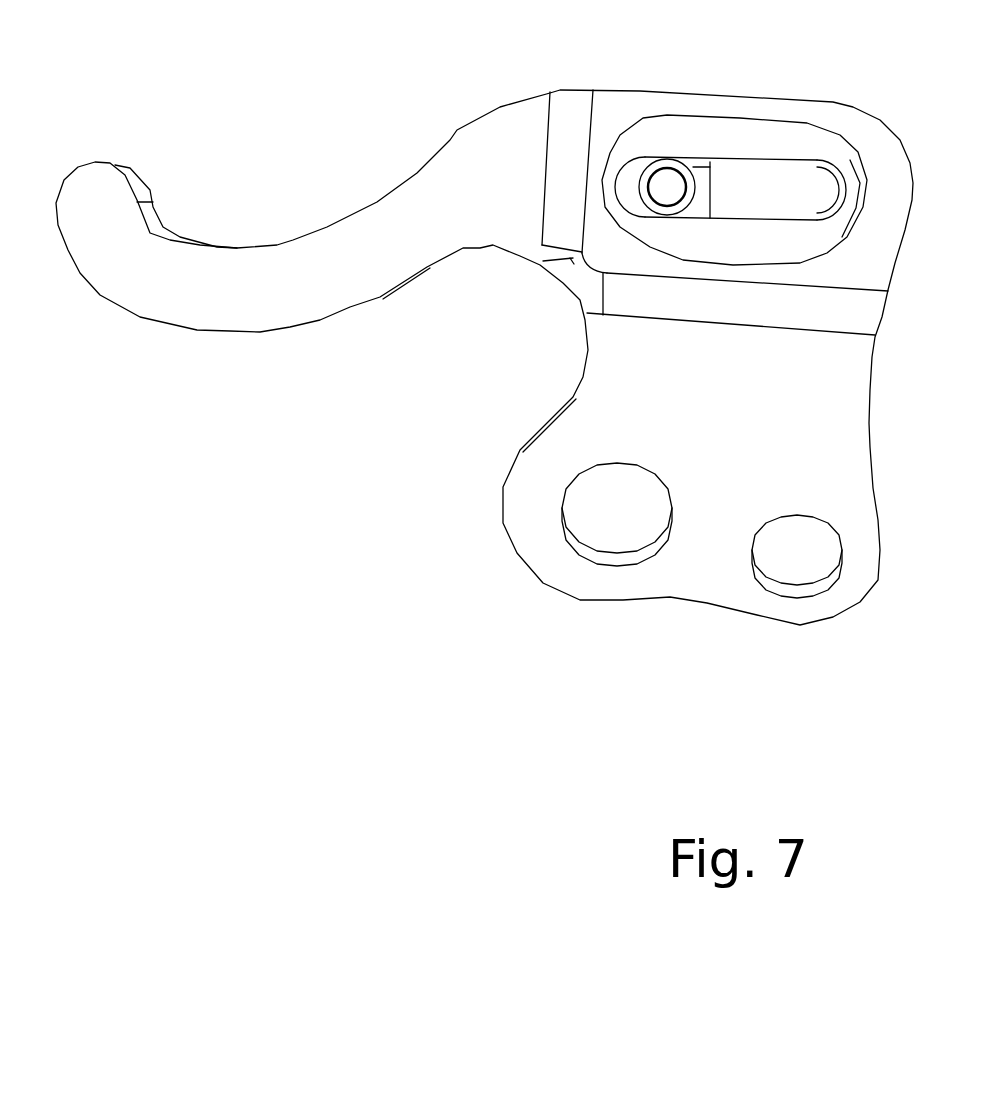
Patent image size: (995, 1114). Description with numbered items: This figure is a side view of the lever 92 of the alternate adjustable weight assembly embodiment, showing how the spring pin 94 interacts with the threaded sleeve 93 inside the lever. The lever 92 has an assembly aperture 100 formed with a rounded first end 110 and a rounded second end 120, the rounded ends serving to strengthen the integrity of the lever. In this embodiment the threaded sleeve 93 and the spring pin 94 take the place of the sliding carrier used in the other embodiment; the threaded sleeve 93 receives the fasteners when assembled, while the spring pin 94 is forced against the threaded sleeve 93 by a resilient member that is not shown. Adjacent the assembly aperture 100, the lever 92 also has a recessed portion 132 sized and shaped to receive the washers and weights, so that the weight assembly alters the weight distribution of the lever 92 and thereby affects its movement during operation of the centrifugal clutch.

The lever 92 is at (717, 555).
The threaded sleeve 93 is at (672, 162).
The spring pin 94 is at (703, 185).
The assembly aperture 100 is at (775, 192).
The first end 110 is at (840, 180).
The second end 120 is at (615, 178).
The recessed portion 132 is at (650, 230).